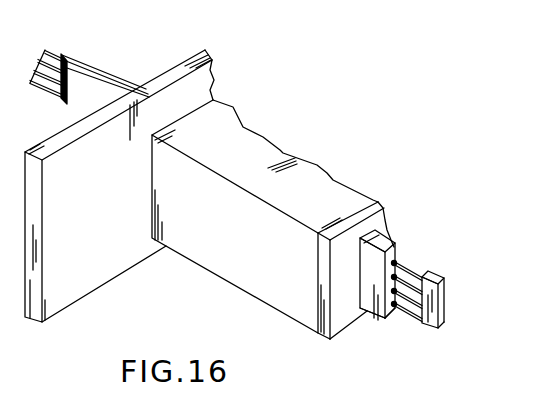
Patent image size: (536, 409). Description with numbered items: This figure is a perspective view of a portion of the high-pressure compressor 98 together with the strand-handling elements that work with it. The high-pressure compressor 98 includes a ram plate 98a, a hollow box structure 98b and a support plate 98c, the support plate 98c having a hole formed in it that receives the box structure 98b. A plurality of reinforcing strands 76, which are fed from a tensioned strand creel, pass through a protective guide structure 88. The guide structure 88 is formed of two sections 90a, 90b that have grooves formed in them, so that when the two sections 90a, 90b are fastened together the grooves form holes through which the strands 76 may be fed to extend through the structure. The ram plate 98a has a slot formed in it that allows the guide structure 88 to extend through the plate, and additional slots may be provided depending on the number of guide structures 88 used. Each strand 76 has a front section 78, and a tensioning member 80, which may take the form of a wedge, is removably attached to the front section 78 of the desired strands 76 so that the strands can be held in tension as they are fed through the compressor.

The reinforcing strands 76 is at (52, 57).
The front section 78 is at (423, 277).
The tensioning member 80 is at (432, 329).
The protective guide structure 88 is at (90, 64).
The section 90a is at (397, 316).
The section 90b is at (390, 246).
The high-pressure compressor 98 is at (233, 107).
The ram plate 98a is at (382, 203).
The hollow box structure 98b is at (283, 152).
The support plate 98c is at (222, 36).